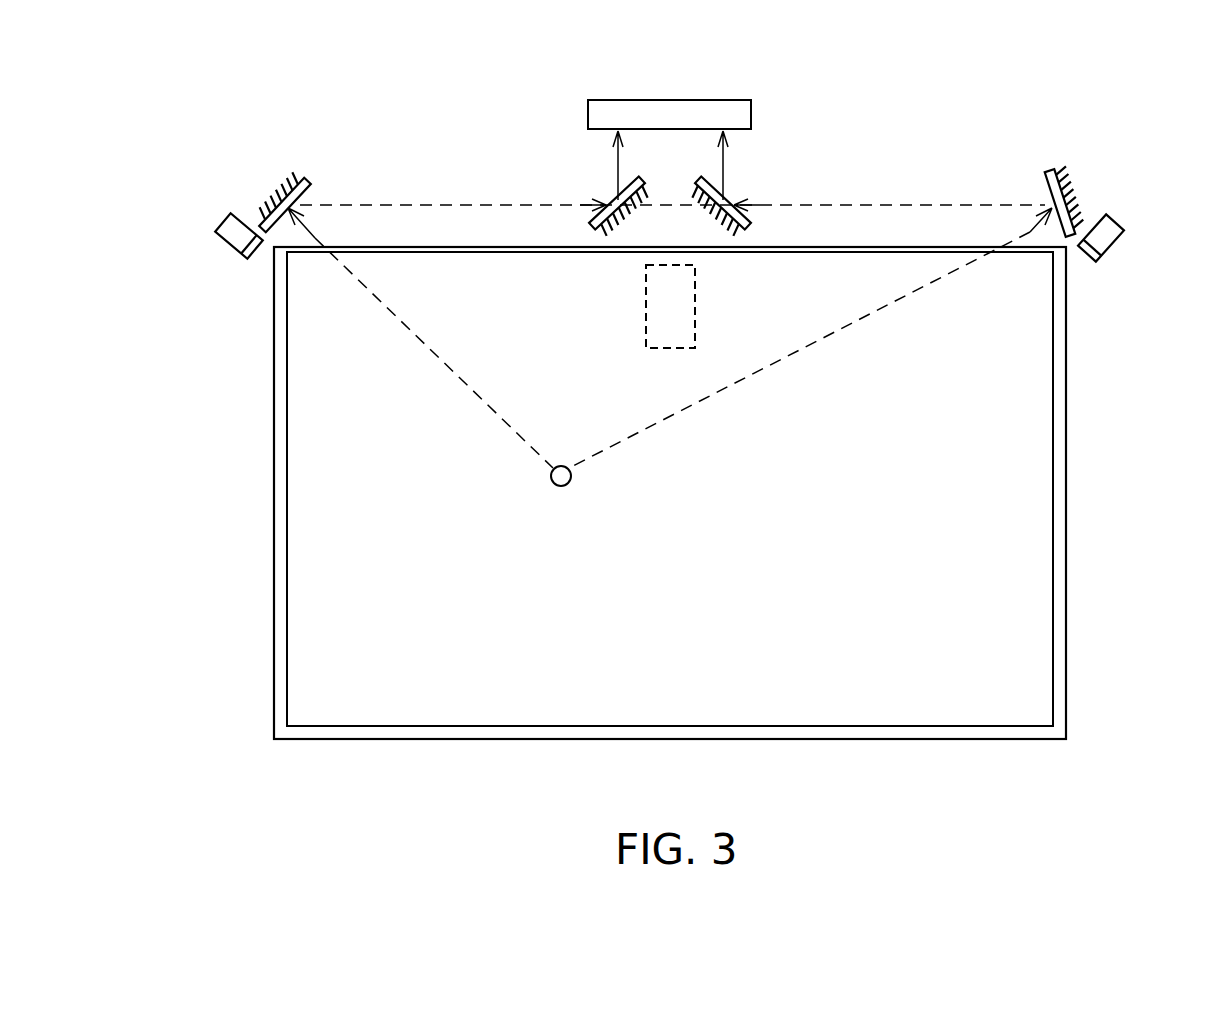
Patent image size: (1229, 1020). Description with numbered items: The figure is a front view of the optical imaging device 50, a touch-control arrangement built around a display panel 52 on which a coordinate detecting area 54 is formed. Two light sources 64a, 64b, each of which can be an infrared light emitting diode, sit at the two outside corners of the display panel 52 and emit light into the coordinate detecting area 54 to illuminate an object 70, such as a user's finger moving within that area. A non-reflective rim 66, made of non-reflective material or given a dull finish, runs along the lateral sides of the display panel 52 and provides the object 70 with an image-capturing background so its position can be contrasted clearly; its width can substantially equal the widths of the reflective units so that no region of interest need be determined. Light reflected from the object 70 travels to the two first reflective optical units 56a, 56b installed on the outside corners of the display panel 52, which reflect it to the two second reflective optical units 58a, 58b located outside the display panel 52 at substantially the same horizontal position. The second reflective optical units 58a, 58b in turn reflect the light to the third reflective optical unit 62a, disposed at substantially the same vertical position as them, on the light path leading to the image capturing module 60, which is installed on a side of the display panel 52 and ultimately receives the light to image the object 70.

The optical imaging device 50 is at (997, 110).
The display panel 52 is at (272, 304).
The coordinate detecting area 54 is at (302, 423).
The first reflective optical unit 56a is at (291, 177).
The first reflective optical unit 56b is at (1072, 183).
The second reflective optical unit 58a is at (612, 200).
The second reflective optical unit 58b is at (726, 200).
The image capturing module 60 is at (695, 288).
The third reflective optical unit 62a is at (674, 100).
The light source 64a is at (228, 220).
The light source 64b is at (1112, 240).
The non-reflective rim 66 is at (281, 478).
The object 70 is at (556, 487).